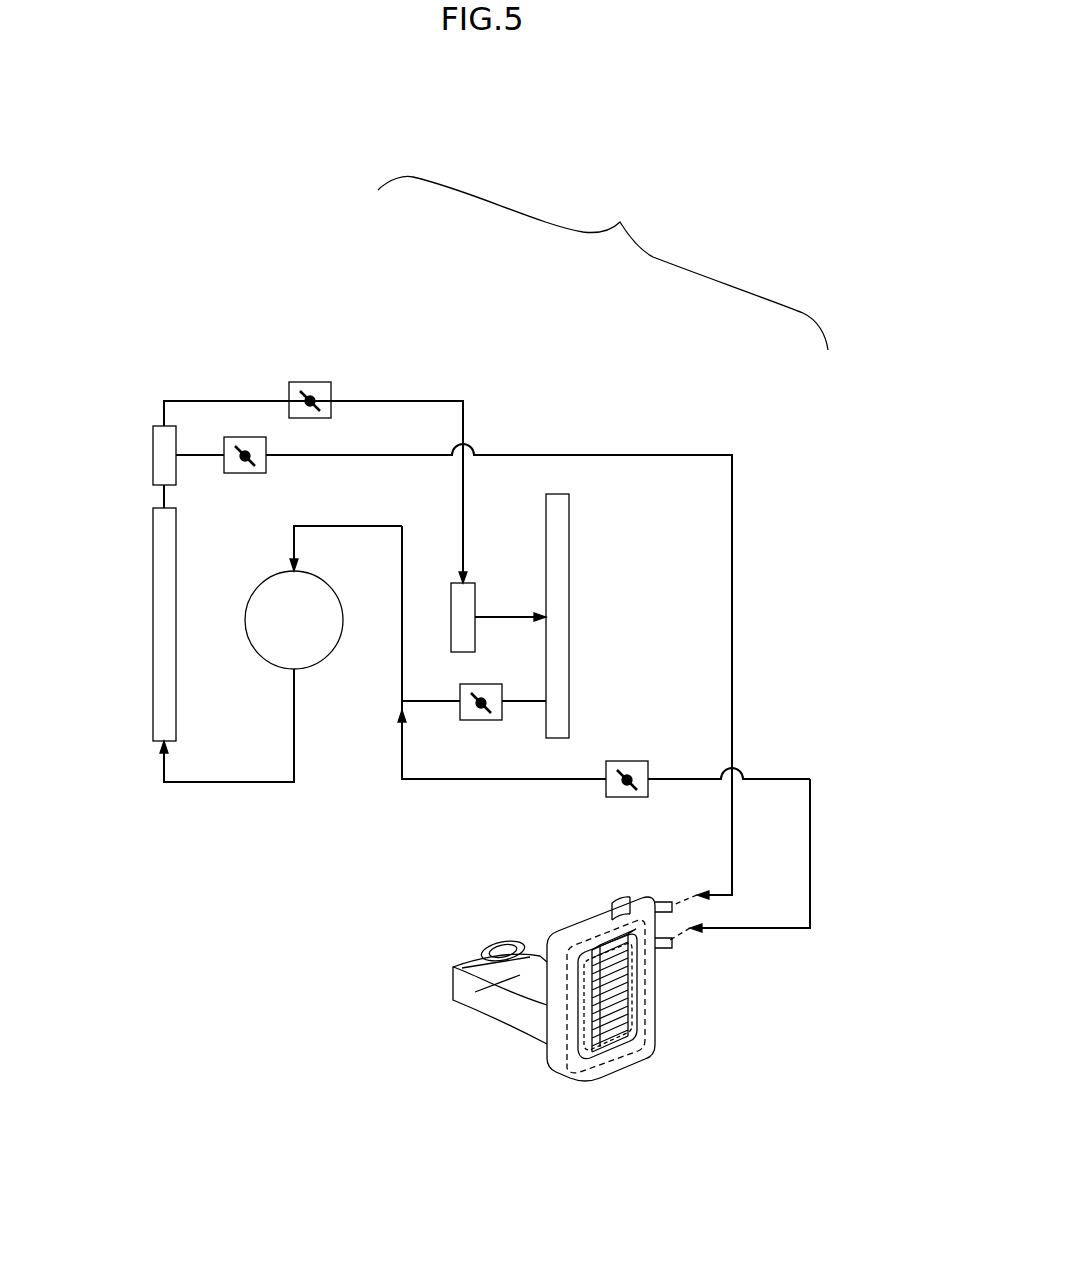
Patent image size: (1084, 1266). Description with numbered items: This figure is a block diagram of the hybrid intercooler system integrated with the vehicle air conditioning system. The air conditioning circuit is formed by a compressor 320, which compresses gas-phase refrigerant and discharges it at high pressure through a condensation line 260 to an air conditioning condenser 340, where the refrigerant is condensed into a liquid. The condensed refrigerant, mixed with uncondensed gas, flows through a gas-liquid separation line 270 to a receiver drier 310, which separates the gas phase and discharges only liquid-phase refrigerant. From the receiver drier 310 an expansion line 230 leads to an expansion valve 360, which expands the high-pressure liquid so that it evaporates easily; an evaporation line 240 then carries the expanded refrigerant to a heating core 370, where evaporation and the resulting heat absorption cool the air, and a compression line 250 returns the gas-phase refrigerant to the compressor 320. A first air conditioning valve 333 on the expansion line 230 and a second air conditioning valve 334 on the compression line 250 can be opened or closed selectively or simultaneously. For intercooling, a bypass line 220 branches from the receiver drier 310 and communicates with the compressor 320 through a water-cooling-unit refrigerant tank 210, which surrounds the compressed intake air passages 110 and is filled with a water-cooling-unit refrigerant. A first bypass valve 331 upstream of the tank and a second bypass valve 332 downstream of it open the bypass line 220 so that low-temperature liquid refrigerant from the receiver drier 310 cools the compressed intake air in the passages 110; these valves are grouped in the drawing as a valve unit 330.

The compressed intake air passage 110 is at (607, 1003).
The water-cooling-unit refrigerant tank 210 is at (553, 1065).
The bypass line 220 is at (811, 852).
The expansion line 230 is at (445, 399).
The evaporation line 240 is at (512, 614).
The compression line 250 is at (402, 615).
The condensation line 260 is at (227, 783).
The gas-liquid separation line 270 is at (165, 495).
The receiver drier 310 is at (160, 450).
The compressor 320 is at (263, 648).
The valve unit 330 is at (603, 263).
The first bypass valve 331 is at (244, 437).
The second bypass valve 332 is at (628, 760).
The first air conditioning valve 333 is at (309, 382).
The second air conditioning valve 334 is at (480, 684).
The air conditioning condenser 340 is at (177, 539).
The expansion valve 360 is at (475, 583).
The heating core 370 is at (569, 616).